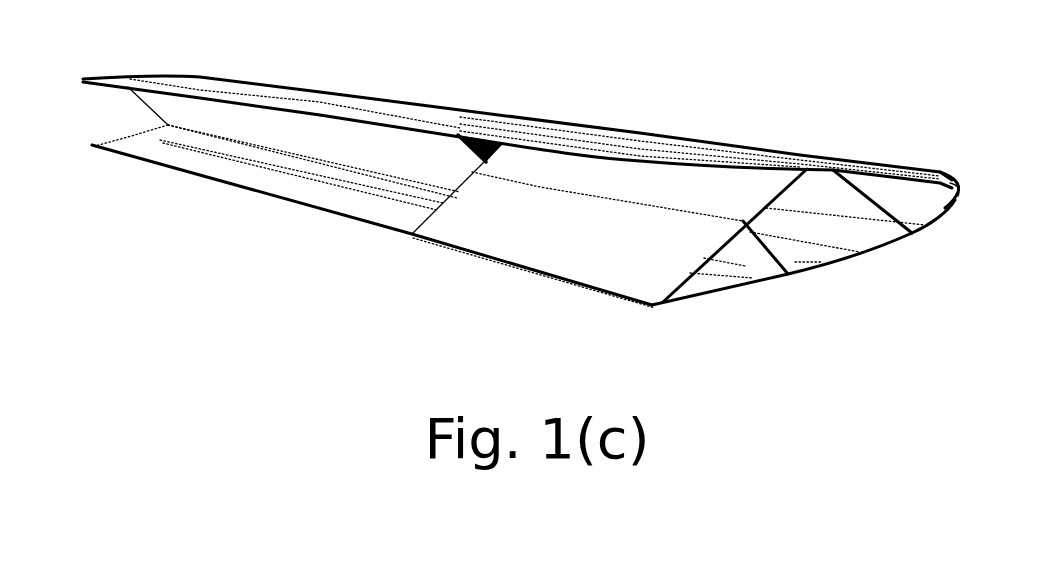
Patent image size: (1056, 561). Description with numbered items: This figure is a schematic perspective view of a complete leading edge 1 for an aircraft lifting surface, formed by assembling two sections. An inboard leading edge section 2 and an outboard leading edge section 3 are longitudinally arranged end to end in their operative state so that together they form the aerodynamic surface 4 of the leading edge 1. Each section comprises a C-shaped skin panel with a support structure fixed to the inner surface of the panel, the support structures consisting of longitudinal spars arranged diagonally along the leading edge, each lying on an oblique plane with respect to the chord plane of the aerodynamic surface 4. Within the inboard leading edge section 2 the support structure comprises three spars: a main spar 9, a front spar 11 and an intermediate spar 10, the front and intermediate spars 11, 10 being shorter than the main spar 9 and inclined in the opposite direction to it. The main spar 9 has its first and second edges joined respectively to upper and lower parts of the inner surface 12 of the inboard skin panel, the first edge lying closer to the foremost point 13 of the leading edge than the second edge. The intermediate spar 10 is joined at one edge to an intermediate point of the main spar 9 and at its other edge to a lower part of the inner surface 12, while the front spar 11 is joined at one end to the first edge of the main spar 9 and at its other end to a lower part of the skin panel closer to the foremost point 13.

The leading edge 1 is at (540, 191).
The inboard leading edge section 2 is at (742, 147).
The outboard leading edge section 3 is at (375, 97).
The aerodynamic surface 4 is at (942, 173).
The main spar 9 is at (502, 222).
The intermediate spar 10 is at (765, 255).
The front spar 11 is at (877, 215).
The inner surface 12 is at (128, 137).
The foremost point 13 is at (960, 188).